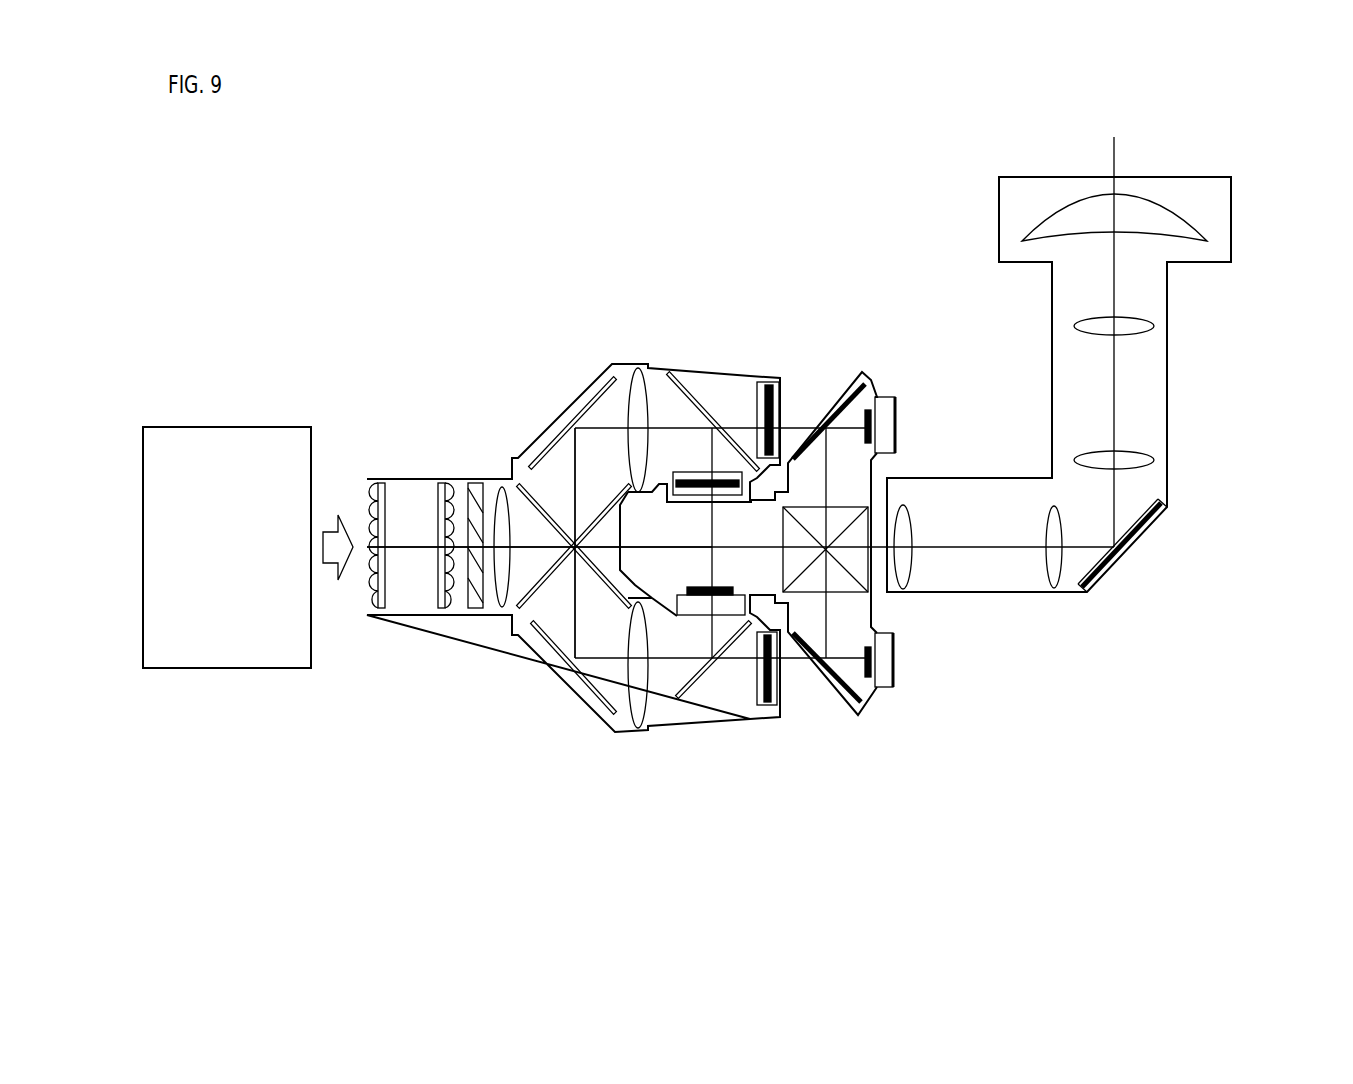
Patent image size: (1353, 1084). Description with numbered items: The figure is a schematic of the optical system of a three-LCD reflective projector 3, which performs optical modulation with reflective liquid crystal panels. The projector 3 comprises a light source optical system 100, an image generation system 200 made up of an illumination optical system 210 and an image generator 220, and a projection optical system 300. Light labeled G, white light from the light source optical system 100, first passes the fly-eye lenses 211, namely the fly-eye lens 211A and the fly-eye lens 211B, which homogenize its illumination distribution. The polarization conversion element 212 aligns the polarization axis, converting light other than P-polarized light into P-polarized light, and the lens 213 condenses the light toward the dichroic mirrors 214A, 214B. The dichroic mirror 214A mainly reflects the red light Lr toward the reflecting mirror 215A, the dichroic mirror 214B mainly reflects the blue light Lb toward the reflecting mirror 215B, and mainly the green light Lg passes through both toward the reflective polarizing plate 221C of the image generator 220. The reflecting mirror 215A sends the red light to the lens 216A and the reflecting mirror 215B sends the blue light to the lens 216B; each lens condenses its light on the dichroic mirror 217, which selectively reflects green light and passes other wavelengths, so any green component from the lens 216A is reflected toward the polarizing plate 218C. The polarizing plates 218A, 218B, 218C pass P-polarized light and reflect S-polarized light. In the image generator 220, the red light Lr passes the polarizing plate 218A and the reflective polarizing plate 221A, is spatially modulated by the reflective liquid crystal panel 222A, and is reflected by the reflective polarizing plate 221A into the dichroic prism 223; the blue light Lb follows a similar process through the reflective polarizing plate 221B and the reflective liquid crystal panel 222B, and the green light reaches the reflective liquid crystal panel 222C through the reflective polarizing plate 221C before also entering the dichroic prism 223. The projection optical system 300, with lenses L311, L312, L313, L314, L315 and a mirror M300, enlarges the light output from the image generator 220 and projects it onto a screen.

The projector 3 is at (387, 225).
The light source optical system 100 is at (228, 668).
The image generation system 200 is at (948, 881).
The illumination optical system 210 is at (590, 765).
The fly-eye lenses 211 is at (468, 372).
The fly-eye lens 211A is at (378, 480).
The fly-eye lens 211B is at (440, 480).
The polarization conversion element 212 is at (476, 610).
The lens 213 is at (498, 485).
The dichroic mirror 214A is at (518, 632).
The dichroic mirror 214B is at (517, 455).
The reflecting mirror 215A is at (565, 410).
The reflecting mirror 215B is at (553, 660).
The lens 216A is at (630, 367).
The lens 216B is at (634, 707).
The dichroic mirror 217 is at (688, 368).
The polarizing plate 218A is at (767, 383).
The polarizing plate 218B is at (765, 707).
The polarizing plate 218C is at (722, 472).
The image generator 220 is at (880, 797).
The reflective polarizing plate 221A is at (868, 378).
The reflective polarizing plate 221B is at (867, 700).
The reflective polarizing plate 221C is at (735, 600).
The reflective liquid crystal panel 222A is at (887, 403).
The reflective liquid crystal panel 222B is at (890, 693).
The reflective liquid crystal panel 222C is at (700, 603).
The dichroic prism 223 is at (835, 593).
The projection optical system 300 is at (1136, 595).
The lens L311 is at (905, 515).
The lens L312 is at (1055, 583).
The lens L313 is at (1150, 459).
The lens L314 is at (1150, 324).
The lens L315 is at (1165, 212).
The mirror M300 is at (1141, 529).
The light G is at (471, 532).
The red light Lr is at (580, 463).
The green light Lg is at (708, 451).
The blue light Lb is at (580, 631).